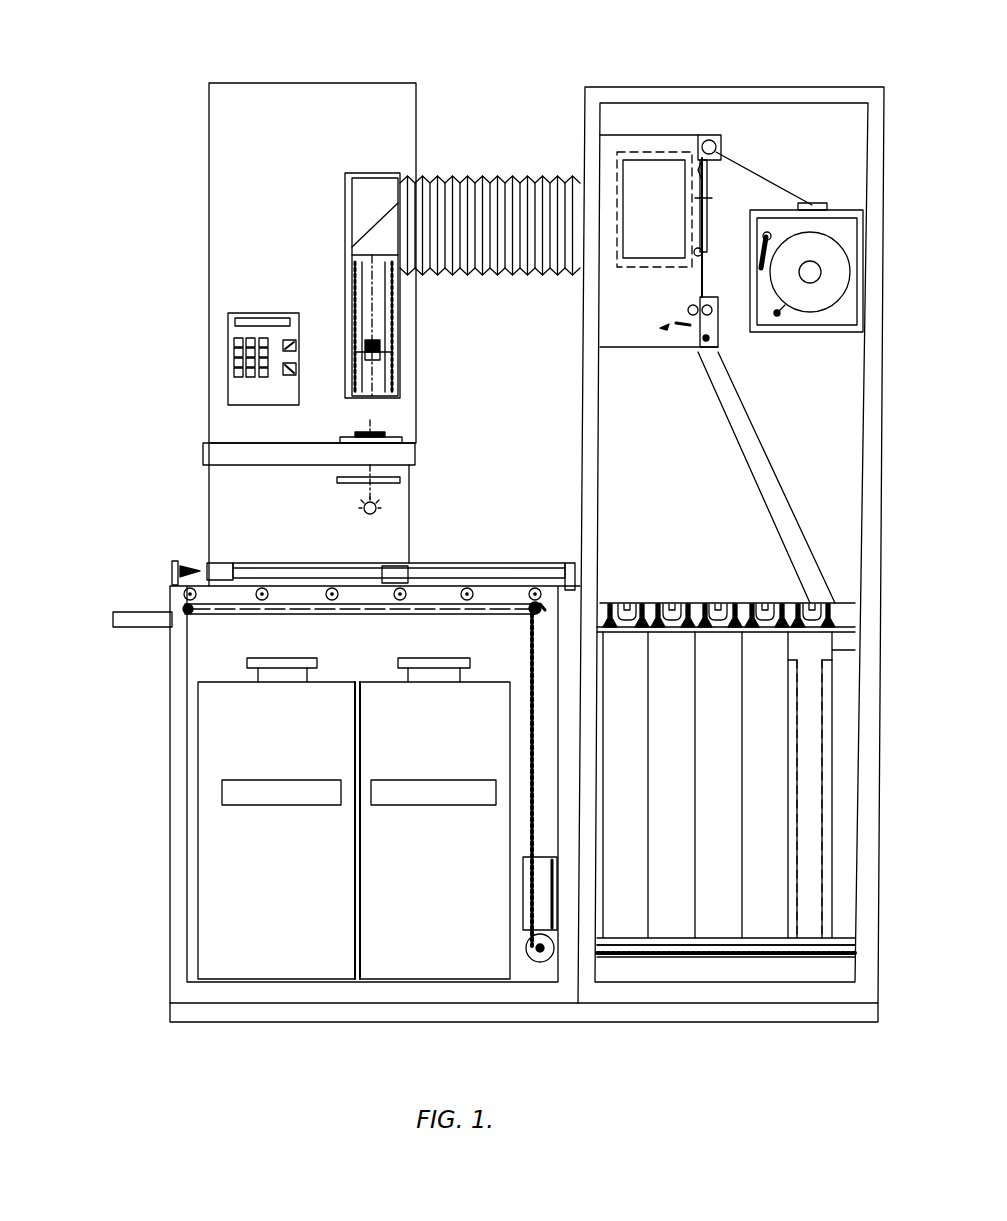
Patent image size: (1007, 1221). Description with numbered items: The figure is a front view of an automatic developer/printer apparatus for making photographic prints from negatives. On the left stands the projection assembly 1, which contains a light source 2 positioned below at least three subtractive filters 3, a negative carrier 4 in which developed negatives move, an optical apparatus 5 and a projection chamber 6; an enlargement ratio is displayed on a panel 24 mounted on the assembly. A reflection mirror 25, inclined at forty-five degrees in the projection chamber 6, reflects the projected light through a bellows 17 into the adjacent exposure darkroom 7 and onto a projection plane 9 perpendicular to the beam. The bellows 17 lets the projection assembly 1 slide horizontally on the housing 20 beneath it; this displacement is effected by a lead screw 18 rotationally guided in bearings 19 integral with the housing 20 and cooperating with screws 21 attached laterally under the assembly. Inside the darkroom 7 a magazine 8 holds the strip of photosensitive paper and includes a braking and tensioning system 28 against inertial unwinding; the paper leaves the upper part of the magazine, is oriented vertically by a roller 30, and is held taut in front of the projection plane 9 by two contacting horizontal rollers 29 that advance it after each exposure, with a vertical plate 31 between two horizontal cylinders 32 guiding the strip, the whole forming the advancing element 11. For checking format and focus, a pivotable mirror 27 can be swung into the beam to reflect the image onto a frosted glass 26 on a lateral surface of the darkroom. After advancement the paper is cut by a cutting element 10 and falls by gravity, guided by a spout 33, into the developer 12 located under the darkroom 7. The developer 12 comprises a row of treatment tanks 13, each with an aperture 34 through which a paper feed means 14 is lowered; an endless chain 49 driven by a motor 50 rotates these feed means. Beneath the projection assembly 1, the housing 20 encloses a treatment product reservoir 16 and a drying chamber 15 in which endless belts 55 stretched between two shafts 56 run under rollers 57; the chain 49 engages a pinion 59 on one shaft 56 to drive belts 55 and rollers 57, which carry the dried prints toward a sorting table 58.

The projection assembly 1 is at (190, 367).
The light source 2 is at (378, 508).
The subtractive filters 3 is at (398, 478).
The negative carrier 4 is at (395, 435).
The optical apparatus 5 is at (380, 352).
The projection chamber 6 is at (372, 300).
The exposure darkroom 7 is at (578, 78).
The magazine 8 is at (700, 180).
The projection plane 9 is at (700, 212).
The cutting element 10 is at (688, 305).
The advancing element 11 is at (660, 328).
The developer 12 is at (694, 600).
The treatment tanks 13 is at (640, 930).
The paper feed means 14 is at (822, 945).
The drying chamber 15 is at (292, 593).
The treatment product reservoir 16 is at (357, 958).
The bellows 17 is at (460, 185).
The lead screw 18 is at (203, 568).
The bearings 19 is at (170, 572).
The housing 20 is at (182, 990).
The screws 21 is at (404, 575).
The panel 24 is at (233, 328).
The reflection mirror 25 is at (385, 228).
The frosted glass 26 is at (640, 160).
The pivotable mirror 27 is at (655, 152).
The braking and tensioning system 28 is at (771, 237).
The horizontal rollers 29 is at (722, 345).
The roller 30 is at (714, 142).
The vertical plate 31 is at (705, 195).
The horizontal cylinders 32 is at (700, 165).
The spout 33 is at (785, 520).
The aperture 34 is at (762, 602).
The endless chain 49 is at (648, 955).
The motor 50 is at (545, 905).
The endless belts 55 is at (265, 613).
The shafts 56 is at (542, 605).
The rollers 57 is at (467, 593).
The sorting table 58 is at (130, 620).
The pinion 59 is at (530, 612).